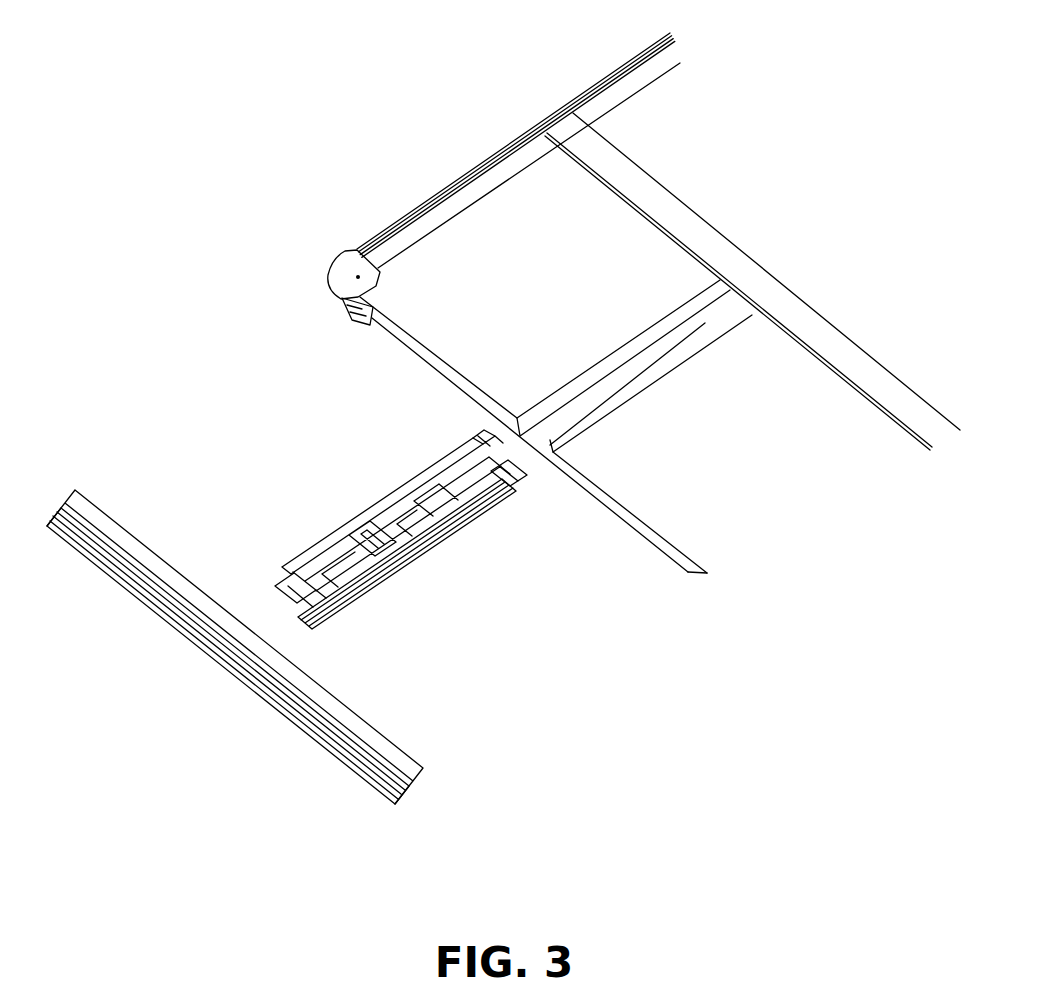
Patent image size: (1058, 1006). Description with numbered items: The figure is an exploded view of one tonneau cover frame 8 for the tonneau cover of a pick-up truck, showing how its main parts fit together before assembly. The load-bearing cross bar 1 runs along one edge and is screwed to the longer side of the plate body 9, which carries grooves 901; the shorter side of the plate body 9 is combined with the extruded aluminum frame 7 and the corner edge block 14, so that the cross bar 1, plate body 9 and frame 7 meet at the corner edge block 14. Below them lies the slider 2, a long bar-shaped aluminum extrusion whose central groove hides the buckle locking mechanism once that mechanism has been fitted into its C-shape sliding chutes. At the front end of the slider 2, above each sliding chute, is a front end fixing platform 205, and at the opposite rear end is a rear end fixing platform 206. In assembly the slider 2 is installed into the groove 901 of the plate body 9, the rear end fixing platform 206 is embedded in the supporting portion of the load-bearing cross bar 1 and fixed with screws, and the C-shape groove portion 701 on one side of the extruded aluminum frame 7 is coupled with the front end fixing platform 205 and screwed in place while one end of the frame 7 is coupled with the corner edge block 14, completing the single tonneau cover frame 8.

The load-bearing cross bar 1 is at (693, 220).
The slider 2 is at (445, 542).
The extruded aluminum frame 7 is at (602, 88).
The tonneau cover frame 8 is at (472, 162).
The plate body 9 is at (657, 547).
The corner edge block 14 is at (340, 278).
The front end fixing platform 205 is at (288, 583).
The rear end fixing platform 206 is at (478, 436).
The C-shape groove portion 701 is at (423, 787).
The groove 901 is at (550, 440).